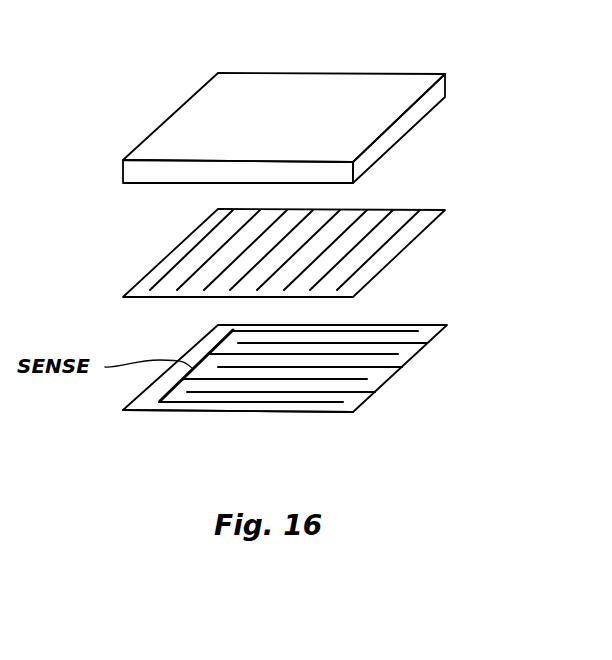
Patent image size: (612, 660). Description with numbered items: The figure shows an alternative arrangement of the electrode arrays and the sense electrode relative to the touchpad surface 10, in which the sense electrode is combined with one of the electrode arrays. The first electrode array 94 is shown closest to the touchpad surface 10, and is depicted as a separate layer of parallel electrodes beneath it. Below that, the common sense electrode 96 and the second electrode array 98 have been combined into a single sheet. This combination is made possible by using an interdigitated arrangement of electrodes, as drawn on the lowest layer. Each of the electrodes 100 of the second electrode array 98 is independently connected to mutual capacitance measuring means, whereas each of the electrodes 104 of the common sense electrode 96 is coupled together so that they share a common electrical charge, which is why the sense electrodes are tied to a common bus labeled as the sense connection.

The touchpad surface 10 is at (363, 80).
The first electrode array 94 is at (415, 240).
The common sense electrode 96 is at (157, 410).
The second electrode array 98 is at (280, 413).
The electrodes of the second electrode array 100 is at (378, 393).
The electrodes of the common sense electrode 104 is at (255, 333).